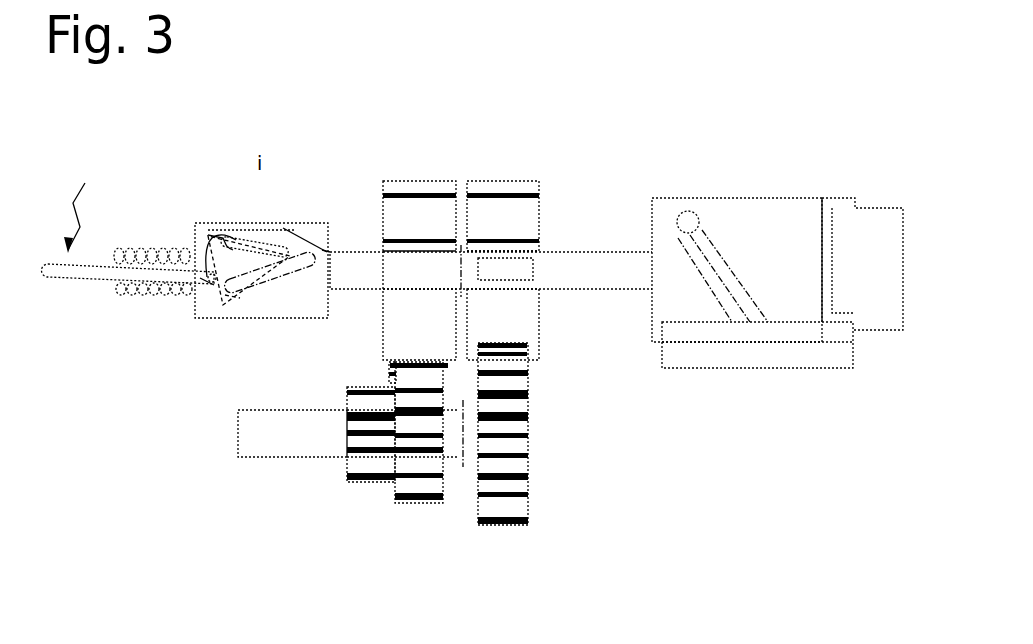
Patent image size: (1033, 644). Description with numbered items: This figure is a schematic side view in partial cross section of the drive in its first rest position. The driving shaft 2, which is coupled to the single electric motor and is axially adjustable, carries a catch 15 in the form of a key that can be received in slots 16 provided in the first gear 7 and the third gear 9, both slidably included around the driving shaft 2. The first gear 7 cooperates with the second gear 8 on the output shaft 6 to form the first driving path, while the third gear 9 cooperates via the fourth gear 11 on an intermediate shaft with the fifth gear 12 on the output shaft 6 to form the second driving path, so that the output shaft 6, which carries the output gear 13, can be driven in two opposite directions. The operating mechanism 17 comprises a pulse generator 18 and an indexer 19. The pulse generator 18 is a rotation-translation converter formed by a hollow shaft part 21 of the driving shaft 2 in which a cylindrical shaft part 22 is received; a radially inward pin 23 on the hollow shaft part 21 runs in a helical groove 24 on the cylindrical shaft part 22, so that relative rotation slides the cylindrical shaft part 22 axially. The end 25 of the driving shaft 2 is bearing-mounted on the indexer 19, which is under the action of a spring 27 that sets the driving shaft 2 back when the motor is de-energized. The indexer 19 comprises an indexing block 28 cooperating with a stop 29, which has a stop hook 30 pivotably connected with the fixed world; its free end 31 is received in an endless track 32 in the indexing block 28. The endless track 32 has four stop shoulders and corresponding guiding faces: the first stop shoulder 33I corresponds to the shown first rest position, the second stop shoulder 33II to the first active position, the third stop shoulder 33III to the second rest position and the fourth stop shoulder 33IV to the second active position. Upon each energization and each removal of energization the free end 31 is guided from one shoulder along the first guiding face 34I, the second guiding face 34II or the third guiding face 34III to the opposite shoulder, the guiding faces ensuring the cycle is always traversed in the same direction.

The driving shaft 2 is at (610, 267).
The output shaft 6 is at (285, 442).
The first gear 7 is at (495, 213).
The second gear 8 is at (515, 497).
The third gear 9 is at (413, 216).
The fourth gear 11 is at (390, 382).
The fifth gear 12 is at (415, 487).
The output gear 13 is at (367, 463).
The catch 15 is at (507, 273).
The slots 16 is at (393, 250).
The operating mechanism 17 is at (480, 117).
The pulse generator 18 is at (923, 142).
The indexer 19 is at (333, 150).
The hollow shaft part 21 is at (733, 335).
The cylindrical shaft part 22 is at (660, 210).
The pin 23 is at (690, 218).
The helical groove 24 is at (710, 233).
The end of the driving shaft 25 is at (353, 276).
The spring 27 is at (134, 298).
The indexing block 28 is at (327, 317).
The stop 29 is at (79, 205).
The stop hook 30 is at (66, 274).
The free end 31 is at (214, 287).
The endless track 32 is at (258, 284).
The first stop shoulder 33I is at (205, 257).
The second stop shoulder 33II is at (250, 237).
The third stop shoulder 33III is at (213, 235).
The fourth stop shoulder 33IV is at (333, 247).
The first guiding face 34I is at (240, 297).
The second guiding face 34II is at (207, 243).
The third guiding face 34III is at (284, 228).